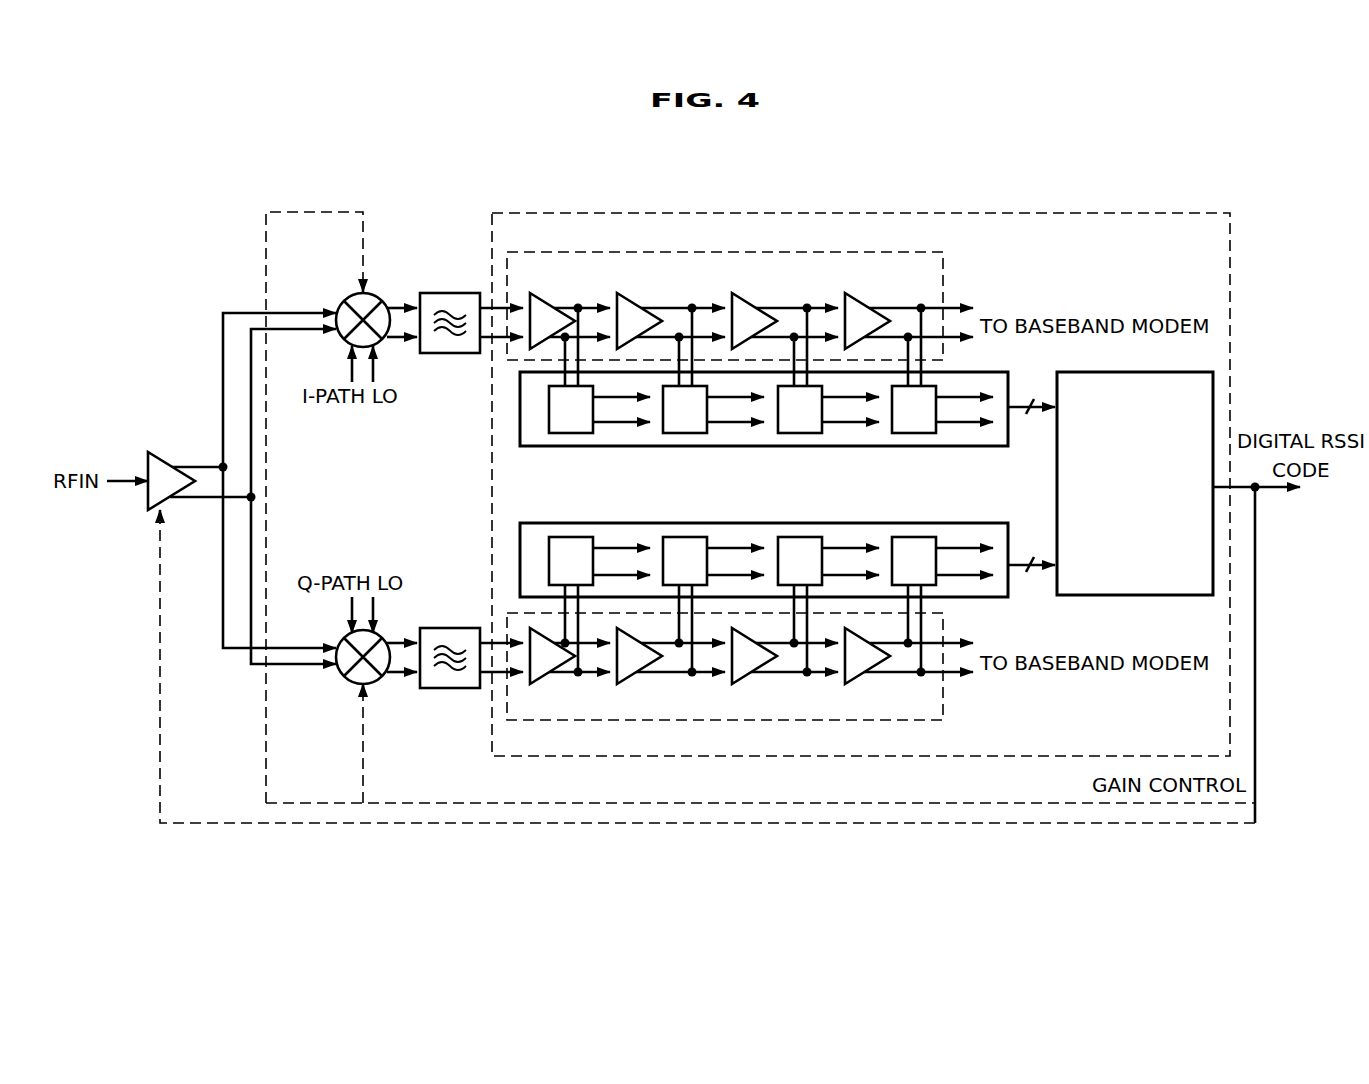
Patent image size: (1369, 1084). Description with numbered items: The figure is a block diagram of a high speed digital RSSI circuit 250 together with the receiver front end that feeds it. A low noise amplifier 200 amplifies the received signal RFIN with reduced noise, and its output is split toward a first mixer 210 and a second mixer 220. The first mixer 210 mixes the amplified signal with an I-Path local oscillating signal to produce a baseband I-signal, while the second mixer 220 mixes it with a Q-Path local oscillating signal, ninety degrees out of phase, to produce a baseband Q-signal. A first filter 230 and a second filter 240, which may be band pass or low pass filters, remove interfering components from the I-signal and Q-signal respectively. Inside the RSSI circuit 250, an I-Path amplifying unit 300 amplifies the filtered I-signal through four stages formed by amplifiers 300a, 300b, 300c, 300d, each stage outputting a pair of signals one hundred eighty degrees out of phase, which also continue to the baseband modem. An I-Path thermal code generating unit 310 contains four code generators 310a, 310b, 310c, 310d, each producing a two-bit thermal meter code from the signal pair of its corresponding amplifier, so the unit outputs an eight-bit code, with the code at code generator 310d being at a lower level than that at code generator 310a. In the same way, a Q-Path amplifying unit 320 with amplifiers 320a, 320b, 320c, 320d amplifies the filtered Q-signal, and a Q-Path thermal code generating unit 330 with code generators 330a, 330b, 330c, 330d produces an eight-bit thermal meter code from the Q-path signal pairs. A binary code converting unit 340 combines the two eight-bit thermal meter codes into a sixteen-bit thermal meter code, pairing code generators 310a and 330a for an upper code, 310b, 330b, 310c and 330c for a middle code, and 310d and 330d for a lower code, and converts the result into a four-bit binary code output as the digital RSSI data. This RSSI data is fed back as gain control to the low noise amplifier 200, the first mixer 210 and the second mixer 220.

The low noise amplifier 200 is at (145, 502).
The first mixer 210 is at (375, 292).
The second mixer 220 is at (372, 684).
The first filter 230 is at (448, 353).
The second filter 240 is at (450, 688).
The high speed digital RSSI circuit 250 is at (1162, 213).
The I-Path amplifying unit 300 is at (943, 271).
The amplifier 300a is at (548, 293).
The amplifier 300b is at (636, 293).
The amplifier 300c is at (750, 293).
The amplifier 300d is at (863, 293).
The I-Path thermal code generating unit 310 is at (992, 448).
The code generator 310a is at (573, 433).
The code generator 310b is at (687, 433).
The code generator 310c is at (802, 433).
The code generator 310d is at (916, 433).
The Q-Path amplifying unit 320 is at (943, 704).
The amplifier 320a is at (547, 684).
The amplifier 320b is at (634, 684).
The amplifier 320c is at (749, 684).
The amplifier 320d is at (862, 684).
The Q-Path thermal code generating unit 330 is at (966, 522).
The code generator 330a is at (572, 537).
The code generator 330b is at (686, 537).
The code generator 330c is at (801, 537).
The code generator 330d is at (915, 537).
The binary code converting unit 340 is at (1138, 371).